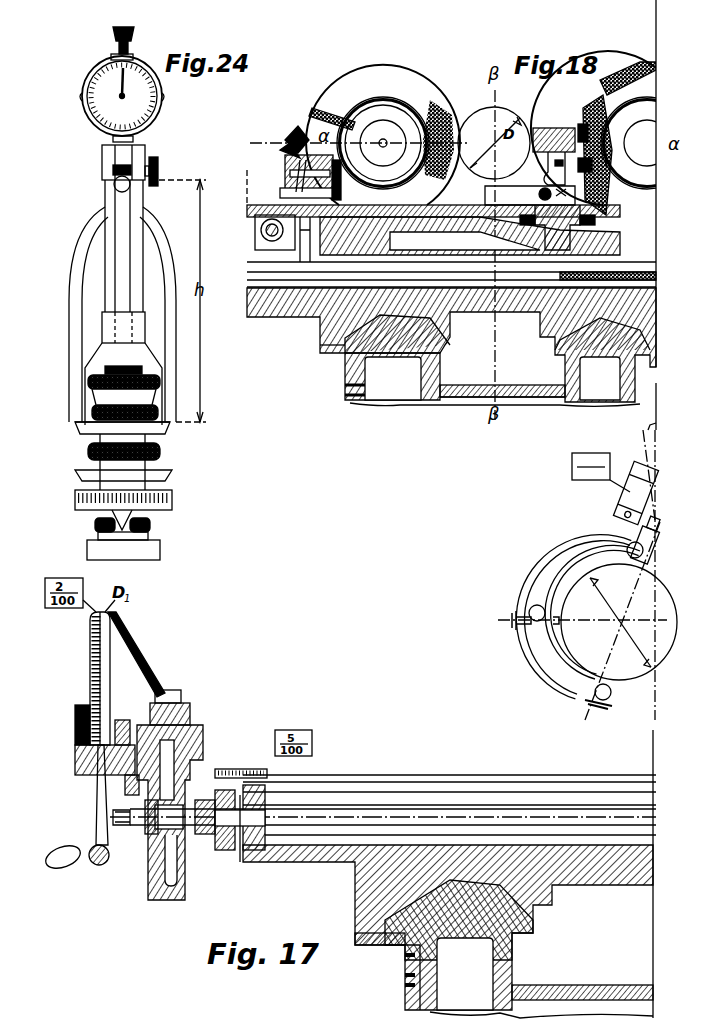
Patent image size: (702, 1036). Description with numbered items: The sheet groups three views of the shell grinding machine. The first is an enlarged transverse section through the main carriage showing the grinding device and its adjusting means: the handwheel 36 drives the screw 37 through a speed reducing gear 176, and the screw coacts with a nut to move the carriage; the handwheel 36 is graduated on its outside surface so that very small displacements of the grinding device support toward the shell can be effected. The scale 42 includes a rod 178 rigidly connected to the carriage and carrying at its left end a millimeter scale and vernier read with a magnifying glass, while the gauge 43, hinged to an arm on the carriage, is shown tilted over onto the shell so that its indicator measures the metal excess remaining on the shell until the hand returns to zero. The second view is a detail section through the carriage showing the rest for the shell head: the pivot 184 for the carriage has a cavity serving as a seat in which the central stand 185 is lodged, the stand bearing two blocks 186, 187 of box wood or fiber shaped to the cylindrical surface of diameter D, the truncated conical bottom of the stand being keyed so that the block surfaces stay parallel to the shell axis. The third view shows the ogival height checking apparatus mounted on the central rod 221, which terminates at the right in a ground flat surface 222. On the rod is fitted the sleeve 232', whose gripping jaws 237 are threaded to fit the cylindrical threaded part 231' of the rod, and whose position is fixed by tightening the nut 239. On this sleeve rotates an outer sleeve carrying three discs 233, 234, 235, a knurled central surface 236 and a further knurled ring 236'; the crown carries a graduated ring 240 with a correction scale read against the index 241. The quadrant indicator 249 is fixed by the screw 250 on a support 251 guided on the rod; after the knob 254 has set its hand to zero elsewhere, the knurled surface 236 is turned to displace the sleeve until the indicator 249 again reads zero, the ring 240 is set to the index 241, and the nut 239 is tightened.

In FIG. 24, the knob 254 is at (134, 34).
In FIG. 24, the quadrant indicator 249 is at (160, 100).
In FIG. 24, the support 251 is at (102, 158).
In FIG. 24, the screw 250 is at (158, 162).
In FIG. 24, the ground flat surface 222 is at (115, 188).
In FIG. 24, the central rod 221 is at (118, 280).
In FIG. 24, the gripping jaws 237 is at (140, 369).
In FIG. 24, the cylindrical threaded part 231' is at (93, 377).
In FIG. 24, the nut 239 is at (102, 397).
In FIG. 24, the lower ring 236' is at (171, 409).
In FIG. 24, the sleeve 232' is at (96, 429).
In FIG. 24, the disc 235 is at (152, 430).
In FIG. 24, the knurled central surface 236 is at (101, 451).
In FIG. 24, the disc 234 is at (80, 473).
In FIG. 24, the ring 240 is at (172, 498).
In FIG. 24, the disc 233 is at (78, 493).
In FIG. 24, the index 241 is at (138, 527).
In FIG. 18, the block 186 is at (535, 135).
In FIG. 18, the central stand 185 is at (559, 168).
In FIG. 18, the block 187 is at (484, 178).
In FIG. 18, the pivot 184 is at (590, 212).
In FIG. 17, the speed reducing gear 176 is at (186, 729).
In FIG. 17, the scale 42 is at (272, 745).
In FIG. 17, the handwheel 36 is at (99, 866).
In FIG. 17, the rod 178 is at (612, 776).
In FIG. 17, the screw 37 is at (625, 828).
In FIG. 17, the gauge 43 is at (528, 572).